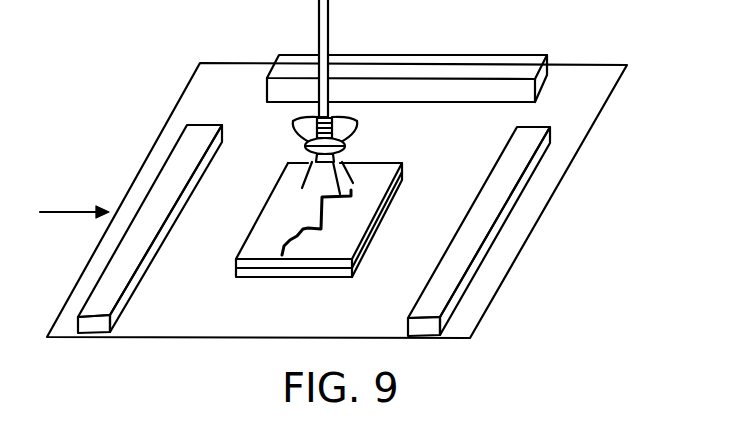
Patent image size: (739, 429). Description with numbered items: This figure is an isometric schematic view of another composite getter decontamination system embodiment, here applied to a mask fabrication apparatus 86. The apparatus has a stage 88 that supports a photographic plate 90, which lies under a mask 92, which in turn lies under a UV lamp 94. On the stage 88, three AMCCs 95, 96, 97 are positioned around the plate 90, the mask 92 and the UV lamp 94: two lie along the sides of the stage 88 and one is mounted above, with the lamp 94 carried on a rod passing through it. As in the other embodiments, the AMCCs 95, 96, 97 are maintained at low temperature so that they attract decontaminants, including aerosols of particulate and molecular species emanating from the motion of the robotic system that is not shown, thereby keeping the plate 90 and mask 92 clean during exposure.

The mask fabrication apparatus 86 is at (74, 201).
The stage 88 is at (183, 328).
The photographic plate 90 is at (310, 273).
The mask 92 is at (390, 207).
The UV lamp 94 is at (357, 121).
The AMCC 95 is at (182, 152).
The AMCC 96 is at (428, 58).
The AMCC 97 is at (530, 148).